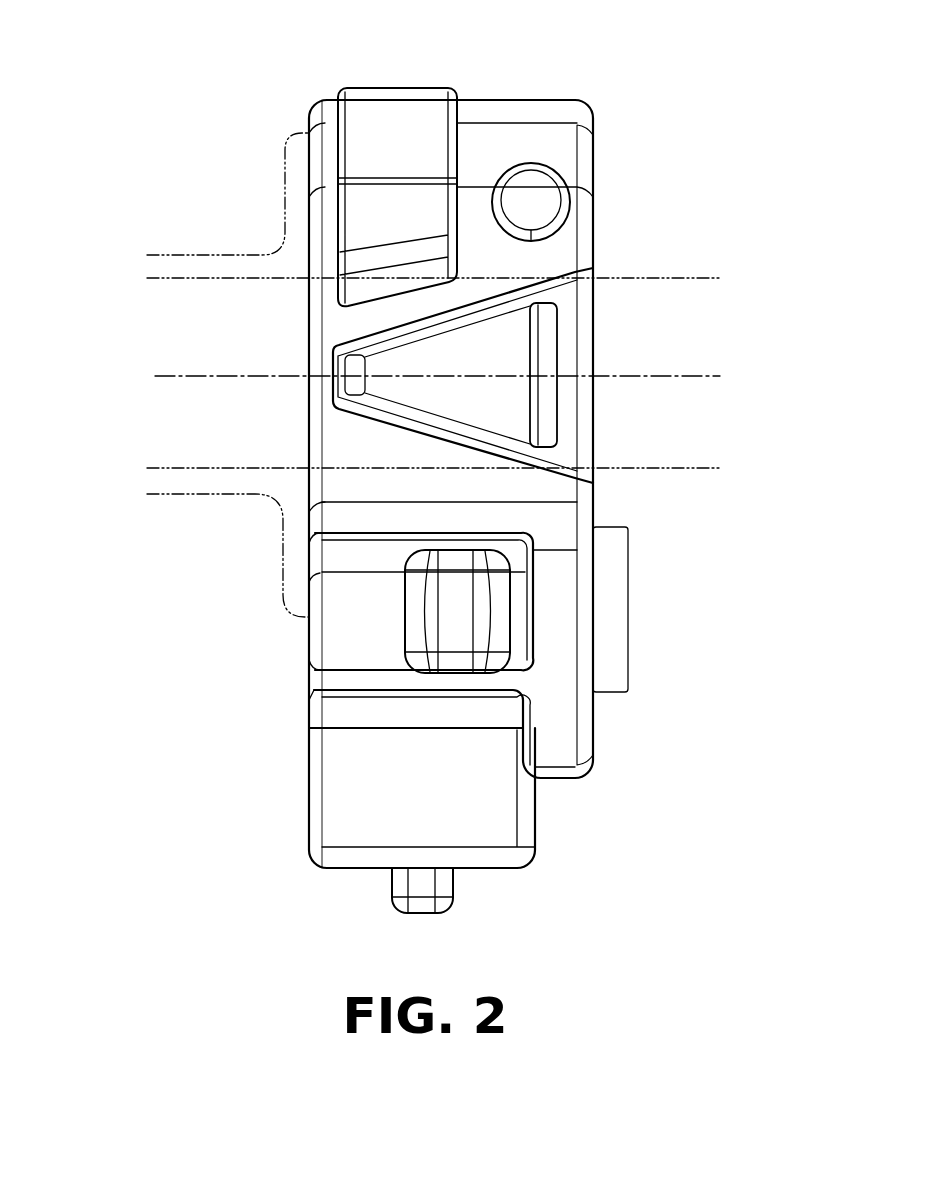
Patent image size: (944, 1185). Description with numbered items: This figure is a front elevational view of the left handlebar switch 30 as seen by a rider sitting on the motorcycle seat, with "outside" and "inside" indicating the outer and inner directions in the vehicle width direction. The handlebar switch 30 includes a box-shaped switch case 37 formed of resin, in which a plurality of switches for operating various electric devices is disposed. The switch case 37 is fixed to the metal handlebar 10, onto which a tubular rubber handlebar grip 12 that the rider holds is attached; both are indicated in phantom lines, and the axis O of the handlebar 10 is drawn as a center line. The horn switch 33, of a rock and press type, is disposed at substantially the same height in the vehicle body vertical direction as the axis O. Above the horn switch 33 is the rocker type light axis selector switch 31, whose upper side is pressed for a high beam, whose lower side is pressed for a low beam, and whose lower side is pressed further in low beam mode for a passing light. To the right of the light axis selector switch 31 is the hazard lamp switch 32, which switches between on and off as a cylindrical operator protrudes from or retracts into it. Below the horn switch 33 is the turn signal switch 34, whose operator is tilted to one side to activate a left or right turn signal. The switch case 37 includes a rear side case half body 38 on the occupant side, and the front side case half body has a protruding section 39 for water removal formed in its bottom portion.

The handlebar 10 is at (180, 278).
The handlebar grip 12 is at (215, 255).
The left handlebar switch 30 is at (620, 56).
The light axis selector switch 31 is at (388, 115).
The hazard lamp switch 32 is at (548, 184).
The horn switch 33 is at (525, 343).
The turn signal switch 34 is at (445, 625).
The switch case 37 is at (551, 100).
The rear side case half body 38 is at (508, 138).
The protruding section 39 is at (422, 905).
The axis O is at (173, 376).